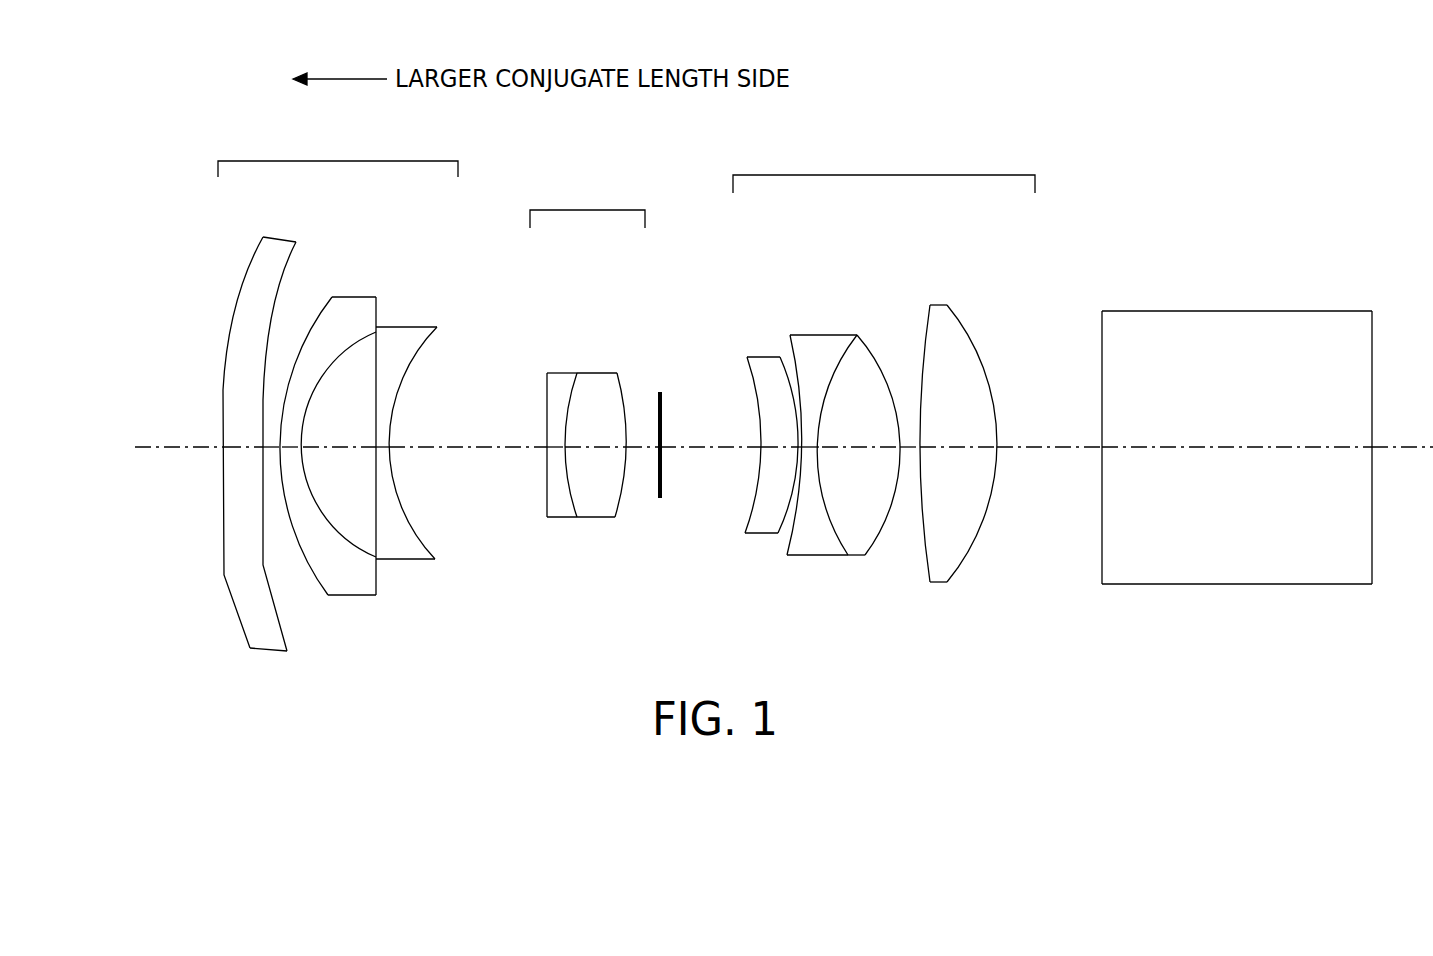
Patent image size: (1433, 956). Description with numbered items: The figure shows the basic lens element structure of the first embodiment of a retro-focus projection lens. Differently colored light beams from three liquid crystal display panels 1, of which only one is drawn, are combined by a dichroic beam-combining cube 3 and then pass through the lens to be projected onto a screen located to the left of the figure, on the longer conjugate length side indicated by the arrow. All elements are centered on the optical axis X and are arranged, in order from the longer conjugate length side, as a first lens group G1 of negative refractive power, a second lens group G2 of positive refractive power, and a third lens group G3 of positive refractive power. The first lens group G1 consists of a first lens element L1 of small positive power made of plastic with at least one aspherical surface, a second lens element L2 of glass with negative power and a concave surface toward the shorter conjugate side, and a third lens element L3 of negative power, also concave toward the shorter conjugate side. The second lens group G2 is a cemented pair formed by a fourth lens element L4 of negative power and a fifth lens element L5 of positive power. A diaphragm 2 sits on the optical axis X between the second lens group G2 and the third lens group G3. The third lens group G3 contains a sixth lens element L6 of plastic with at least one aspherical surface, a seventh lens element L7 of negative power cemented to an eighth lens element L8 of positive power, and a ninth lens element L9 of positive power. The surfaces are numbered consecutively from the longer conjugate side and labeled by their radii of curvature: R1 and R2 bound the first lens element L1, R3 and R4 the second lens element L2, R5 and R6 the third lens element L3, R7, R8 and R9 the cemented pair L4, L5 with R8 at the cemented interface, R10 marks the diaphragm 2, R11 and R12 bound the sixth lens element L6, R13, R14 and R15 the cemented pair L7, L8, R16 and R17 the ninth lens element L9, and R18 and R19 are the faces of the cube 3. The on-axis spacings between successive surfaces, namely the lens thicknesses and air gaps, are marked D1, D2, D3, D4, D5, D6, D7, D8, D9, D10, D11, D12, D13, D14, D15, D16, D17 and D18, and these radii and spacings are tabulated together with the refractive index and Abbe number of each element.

The liquid crystal display panel 1 is at (1432, 310).
The diaphragm 2 is at (662, 392).
The dichroic beam-combining cube 3 is at (1200, 311).
The optical axis X is at (150, 448).
The first lens group G1 is at (299, 392).
The second lens group G2 is at (561, 402).
The third lens group G3 is at (851, 392).
The first lens element L1 is at (270, 237).
The second lens element L2 is at (352, 297).
The third lens element L3 is at (421, 327).
The fourth lens element L4 is at (564, 373).
The fifth lens element L5 is at (603, 373).
The sixth lens element L6 is at (762, 357).
The seventh lens element L7 is at (813, 335).
The eighth lens element L8 is at (855, 335).
The ninth lens element L9 is at (940, 305).
The first surface radius of curvature R1 is at (222, 575).
The second surface radius of curvature R2 is at (276, 627).
The third surface radius of curvature R3 is at (308, 577).
The fourth surface radius of curvature R4 is at (370, 540).
The fifth surface radius of curvature R5 is at (372, 523).
The sixth surface radius of curvature R6 is at (420, 510).
The seventh surface radius of curvature R7 is at (547, 483).
The eighth surface radius of curvature R8 is at (580, 500).
The ninth surface radius of curvature R9 is at (625, 508).
The tenth surface R10 is at (650, 483).
The eleventh surface radius of curvature R11 is at (745, 517).
The twelfth surface radius of curvature R12 is at (750, 507).
The thirteenth surface radius of curvature R13 is at (778, 550).
The fourteenth surface radius of curvature R14 is at (837, 523).
The fifteenth surface radius of curvature R15 is at (865, 555).
The sixteenth surface radius of curvature R16 is at (920, 530).
The seventeenth surface radius of curvature R17 is at (973, 537).
The eighteenth surface R18 is at (1102, 572).
The nineteenth surface R19 is at (1372, 572).
The first on-axis spacing D1 is at (238, 447).
The second on-axis spacing D2 is at (270, 447).
The third on-axis spacing D3 is at (293, 447).
The fourth on-axis spacing D4 is at (368, 447).
The fifth on-axis spacing D5 is at (380, 533).
The sixth on-axis spacing D6 is at (432, 447).
The seventh on-axis spacing D7 is at (555, 450).
The eighth on-axis spacing D8 is at (595, 447).
The ninth on-axis spacing D9 is at (637, 447).
The tenth on-axis spacing D10 is at (680, 447).
The eleventh on-axis spacing D11 is at (768, 447).
The twelfth on-axis spacing D12 is at (803, 447).
The thirteenth on-axis spacing D13 is at (820, 447).
The fourteenth on-axis spacing D14 is at (832, 447).
The fifteenth on-axis spacing D15 is at (915, 447).
The sixteenth on-axis spacing D16 is at (965, 447).
The seventeenth on-axis spacing D17 is at (1053, 447).
The eighteenth on-axis spacing D18 is at (1228, 447).